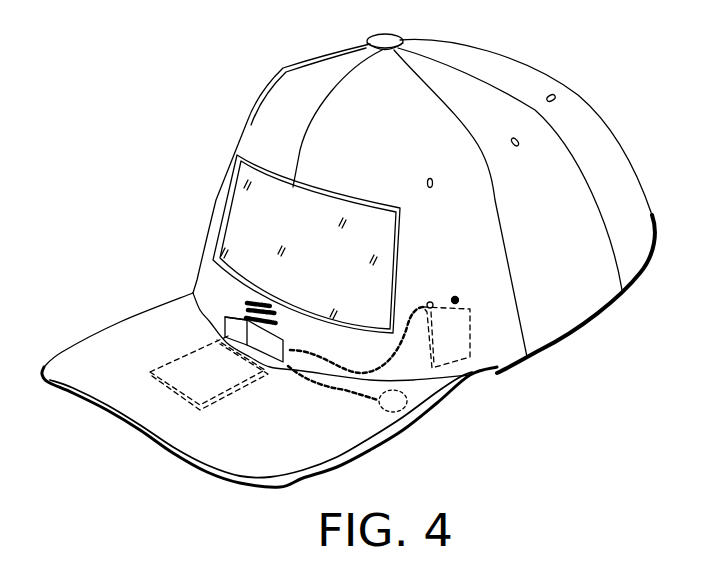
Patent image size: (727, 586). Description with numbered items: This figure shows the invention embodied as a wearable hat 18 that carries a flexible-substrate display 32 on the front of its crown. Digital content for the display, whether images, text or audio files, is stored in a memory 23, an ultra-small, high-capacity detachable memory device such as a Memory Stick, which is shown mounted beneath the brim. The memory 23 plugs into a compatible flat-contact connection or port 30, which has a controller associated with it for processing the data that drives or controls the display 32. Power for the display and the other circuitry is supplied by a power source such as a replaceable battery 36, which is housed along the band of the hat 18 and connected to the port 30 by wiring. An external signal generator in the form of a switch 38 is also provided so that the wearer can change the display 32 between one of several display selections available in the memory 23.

The wearable hat 18 is at (283, 70).
The display 32 is at (233, 203).
The port with controller 30 is at (230, 327).
The memory 23 is at (173, 363).
The replaceable battery 36 is at (472, 357).
The switch 38 is at (404, 408).